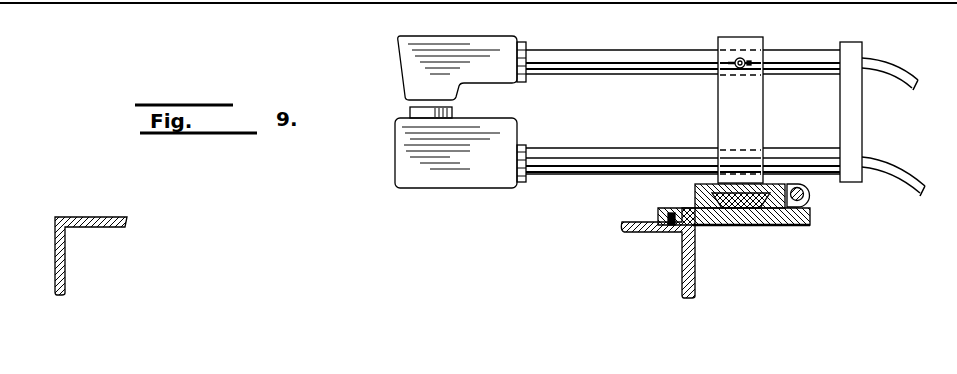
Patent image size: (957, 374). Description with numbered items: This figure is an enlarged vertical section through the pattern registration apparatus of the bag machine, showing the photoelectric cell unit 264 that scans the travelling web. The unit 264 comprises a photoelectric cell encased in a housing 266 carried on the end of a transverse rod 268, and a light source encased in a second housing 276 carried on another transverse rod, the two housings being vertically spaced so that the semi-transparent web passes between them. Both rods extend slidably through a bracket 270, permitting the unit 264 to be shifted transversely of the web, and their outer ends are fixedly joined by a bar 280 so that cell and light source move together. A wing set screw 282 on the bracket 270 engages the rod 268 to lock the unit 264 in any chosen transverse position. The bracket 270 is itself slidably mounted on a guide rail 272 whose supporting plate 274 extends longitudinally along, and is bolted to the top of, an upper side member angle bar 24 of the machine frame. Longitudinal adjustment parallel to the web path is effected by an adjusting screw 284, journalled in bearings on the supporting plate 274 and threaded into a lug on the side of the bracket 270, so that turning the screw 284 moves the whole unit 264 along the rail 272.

The angle bar 24 is at (683, 258).
The photoelectric cell unit 264 is at (382, 63).
The housing 266 is at (495, 38).
The transverse rod 268 is at (622, 50).
The bracket 270 is at (718, 118).
The guide rail 272 is at (752, 208).
The supporting plate 274 is at (810, 226).
The housing 276 is at (485, 182).
The bar 280 is at (862, 116).
The wing set screw 282 is at (747, 58).
The adjusting screw 284 is at (808, 196).